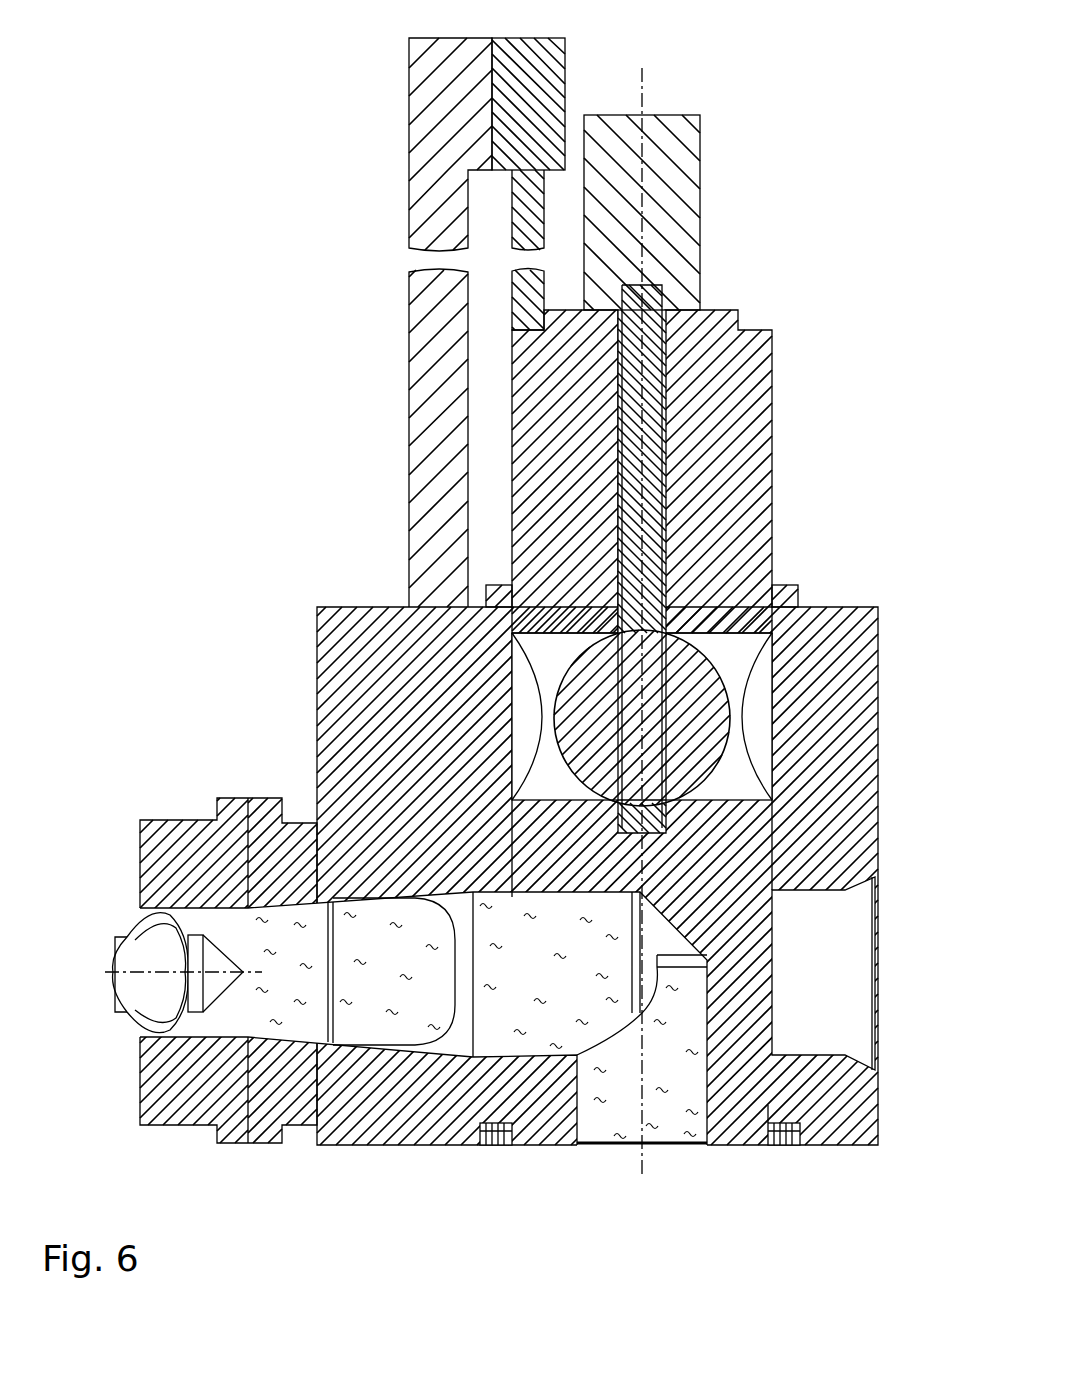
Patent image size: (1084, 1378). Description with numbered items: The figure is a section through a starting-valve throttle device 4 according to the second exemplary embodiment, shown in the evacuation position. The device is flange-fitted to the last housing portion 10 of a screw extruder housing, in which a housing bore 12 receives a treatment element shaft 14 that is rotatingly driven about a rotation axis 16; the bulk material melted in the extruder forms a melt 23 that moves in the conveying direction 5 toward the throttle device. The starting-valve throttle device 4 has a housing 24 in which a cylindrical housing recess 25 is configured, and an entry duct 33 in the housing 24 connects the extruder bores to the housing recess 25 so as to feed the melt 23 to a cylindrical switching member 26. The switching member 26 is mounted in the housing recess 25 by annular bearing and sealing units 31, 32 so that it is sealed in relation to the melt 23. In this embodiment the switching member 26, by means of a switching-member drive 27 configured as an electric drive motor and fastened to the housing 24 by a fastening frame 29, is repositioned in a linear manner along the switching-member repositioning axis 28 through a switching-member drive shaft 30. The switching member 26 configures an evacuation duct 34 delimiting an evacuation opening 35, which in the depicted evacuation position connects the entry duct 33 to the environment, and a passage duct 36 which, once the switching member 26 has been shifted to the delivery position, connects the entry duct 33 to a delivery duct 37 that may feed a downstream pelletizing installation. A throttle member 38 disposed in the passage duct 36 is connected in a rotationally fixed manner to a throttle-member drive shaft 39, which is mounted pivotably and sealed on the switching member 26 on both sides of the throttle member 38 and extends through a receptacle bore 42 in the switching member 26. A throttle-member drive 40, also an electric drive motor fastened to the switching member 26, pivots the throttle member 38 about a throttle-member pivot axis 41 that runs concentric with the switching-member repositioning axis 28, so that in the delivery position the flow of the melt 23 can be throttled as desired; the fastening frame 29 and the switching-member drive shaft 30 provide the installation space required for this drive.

The starting-valve throttle device 4 is at (878, 648).
The conveying direction 5 is at (192, 785).
The housing portion 10 is at (155, 865).
The housing bore 12 is at (187, 915).
The treatment element shaft 14 is at (142, 987).
The rotation axis 16 is at (150, 968).
The melt 23 is at (277, 1020).
The housing 24 is at (855, 830).
The housing recess 25 is at (770, 1103).
The switching member 26 is at (772, 375).
The switching-member drive 27 is at (502, 93).
The switching-member repositioning axis 28 is at (652, 1147).
The fastening frame 29 is at (423, 158).
The switching-member drive shaft 30 is at (520, 303).
The bearing and sealing unit 31 is at (787, 592).
The bearing and sealing unit 32 is at (490, 1143).
The entry duct 33 is at (363, 1032).
The evacuation duct 34 is at (557, 1045).
The evacuation opening 35 is at (692, 1147).
The passage duct 36 is at (735, 695).
The delivery duct 37 is at (833, 1003).
The throttle member 38 is at (721, 767).
The throttle-member drive shaft 39 is at (657, 518).
The throttle-member drive 40 is at (690, 240).
The throttle-member pivot axis 41 is at (644, 173).
The receptacle bore 42 is at (667, 442).